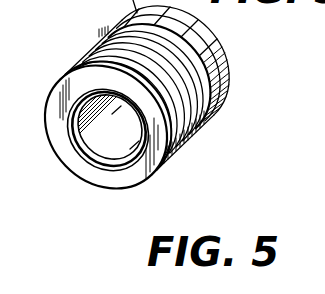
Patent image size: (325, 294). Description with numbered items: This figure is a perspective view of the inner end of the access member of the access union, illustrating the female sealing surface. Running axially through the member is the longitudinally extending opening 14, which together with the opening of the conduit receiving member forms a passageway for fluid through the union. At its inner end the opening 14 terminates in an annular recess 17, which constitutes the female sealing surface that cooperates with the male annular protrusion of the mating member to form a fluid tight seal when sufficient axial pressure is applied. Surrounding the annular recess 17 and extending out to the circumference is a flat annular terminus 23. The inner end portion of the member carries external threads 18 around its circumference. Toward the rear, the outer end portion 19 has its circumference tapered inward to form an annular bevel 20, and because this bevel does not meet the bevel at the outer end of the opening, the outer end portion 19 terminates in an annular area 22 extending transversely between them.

The longitudinally extending opening 14 is at (94, 126).
The annular recess 17 is at (97, 155).
The external threads 18 is at (187, 153).
The outer end portion 19 is at (217, 124).
The annular bevel 20 is at (224, 69).
The annular area 22 is at (224, 43).
The flat annular terminus 23 is at (122, 182).